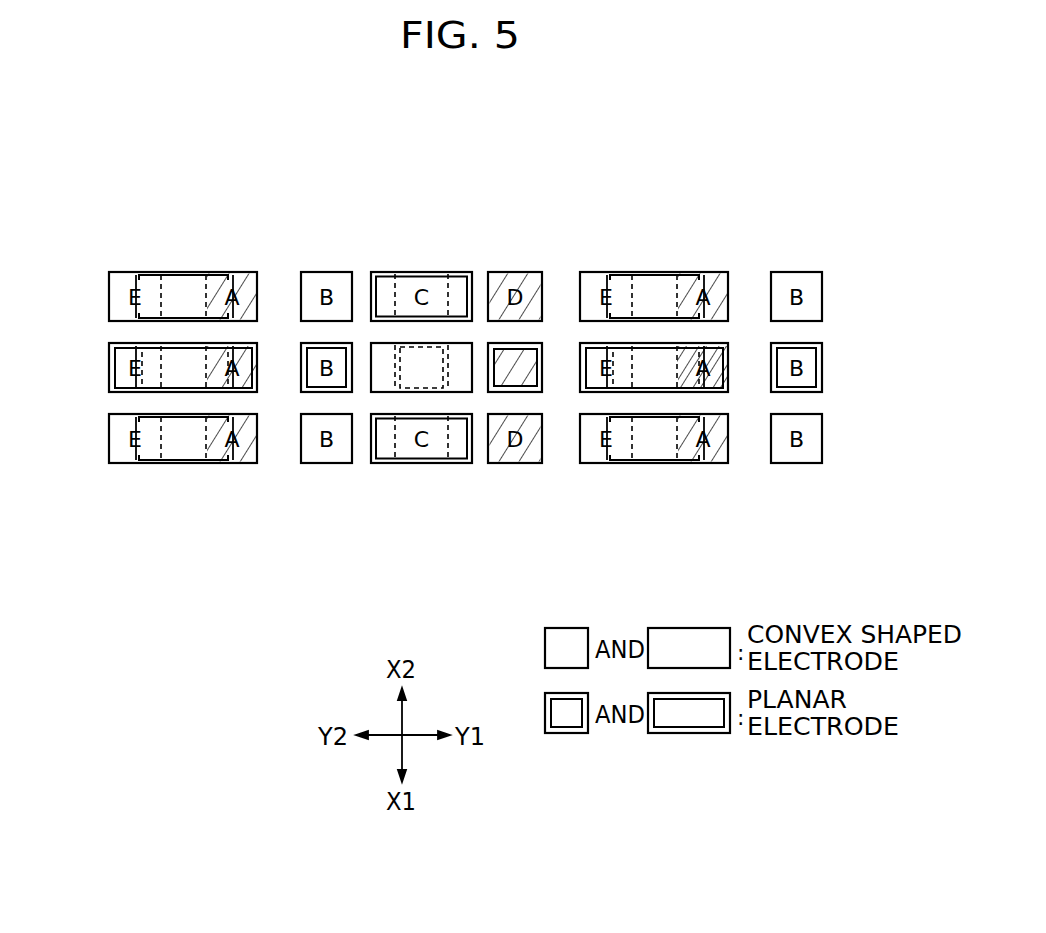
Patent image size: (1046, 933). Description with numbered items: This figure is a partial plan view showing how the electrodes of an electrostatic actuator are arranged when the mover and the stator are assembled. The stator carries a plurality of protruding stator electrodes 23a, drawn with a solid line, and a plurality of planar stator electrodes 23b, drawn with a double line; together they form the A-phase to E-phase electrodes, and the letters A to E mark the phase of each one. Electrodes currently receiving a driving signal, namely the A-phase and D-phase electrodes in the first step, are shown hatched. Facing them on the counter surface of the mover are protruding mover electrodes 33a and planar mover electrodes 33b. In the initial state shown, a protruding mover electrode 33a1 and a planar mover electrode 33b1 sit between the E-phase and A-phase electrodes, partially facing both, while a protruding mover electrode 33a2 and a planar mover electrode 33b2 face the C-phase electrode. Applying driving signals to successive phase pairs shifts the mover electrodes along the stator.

The protruding stator electrode 23a is at (313, 272).
The planar stator electrode 23b is at (112, 350).
The protruding mover electrode 33a is at (688, 347).
The protruding mover electrode 33a1 is at (140, 387).
The protruding mover electrode 33a2 is at (386, 347).
The planar mover electrode 33b is at (659, 283).
The planar mover electrode 33b1 is at (187, 283).
The planar mover electrode 33b2 is at (390, 270).